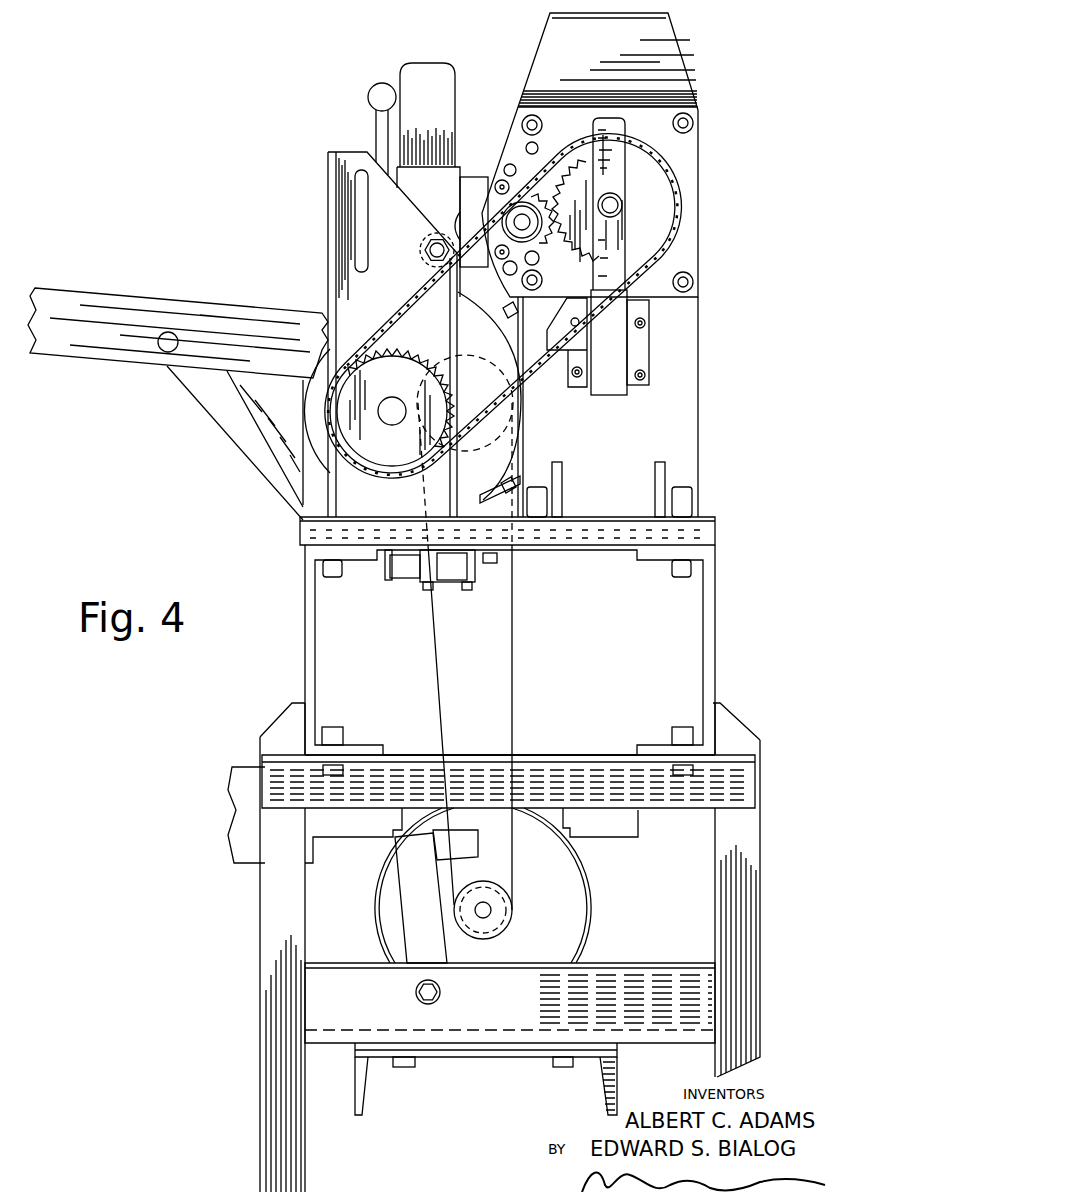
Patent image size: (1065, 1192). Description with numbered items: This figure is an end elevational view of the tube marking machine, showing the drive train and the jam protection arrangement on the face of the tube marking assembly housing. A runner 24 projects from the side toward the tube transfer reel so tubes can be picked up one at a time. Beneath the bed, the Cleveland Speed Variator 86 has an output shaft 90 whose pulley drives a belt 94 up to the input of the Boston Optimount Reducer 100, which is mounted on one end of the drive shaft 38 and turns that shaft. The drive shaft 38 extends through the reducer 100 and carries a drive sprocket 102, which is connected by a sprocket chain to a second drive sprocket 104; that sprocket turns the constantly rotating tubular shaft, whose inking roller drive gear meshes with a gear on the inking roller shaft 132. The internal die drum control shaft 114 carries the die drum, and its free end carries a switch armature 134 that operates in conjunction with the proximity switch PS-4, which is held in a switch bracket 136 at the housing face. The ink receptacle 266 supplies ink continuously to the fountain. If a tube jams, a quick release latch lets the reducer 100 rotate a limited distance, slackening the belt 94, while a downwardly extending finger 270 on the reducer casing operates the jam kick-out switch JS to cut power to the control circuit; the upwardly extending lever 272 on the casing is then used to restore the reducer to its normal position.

The runner 24 is at (268, 318).
The drive shaft 38 is at (385, 407).
The Cleveland Speed Variator 86 is at (578, 917).
The output shaft 90 is at (483, 910).
The belt 94 is at (517, 683).
The Boston Optimount Reducer 100 is at (308, 395).
The drive sprocket 102 is at (410, 357).
The second drive sprocket 104 is at (572, 230).
The die drum control shaft 114 is at (610, 196).
The inking roller shaft 132 is at (517, 217).
The switch armature 134 is at (617, 223).
The switch bracket 136 is at (640, 346).
The ink receptacle 266 is at (440, 83).
The downwardly extending finger 270 is at (387, 570).
The lever 272 is at (380, 122).
The jam kick-out switch JS is at (447, 578).
The proximity switch PS-4 is at (608, 385).